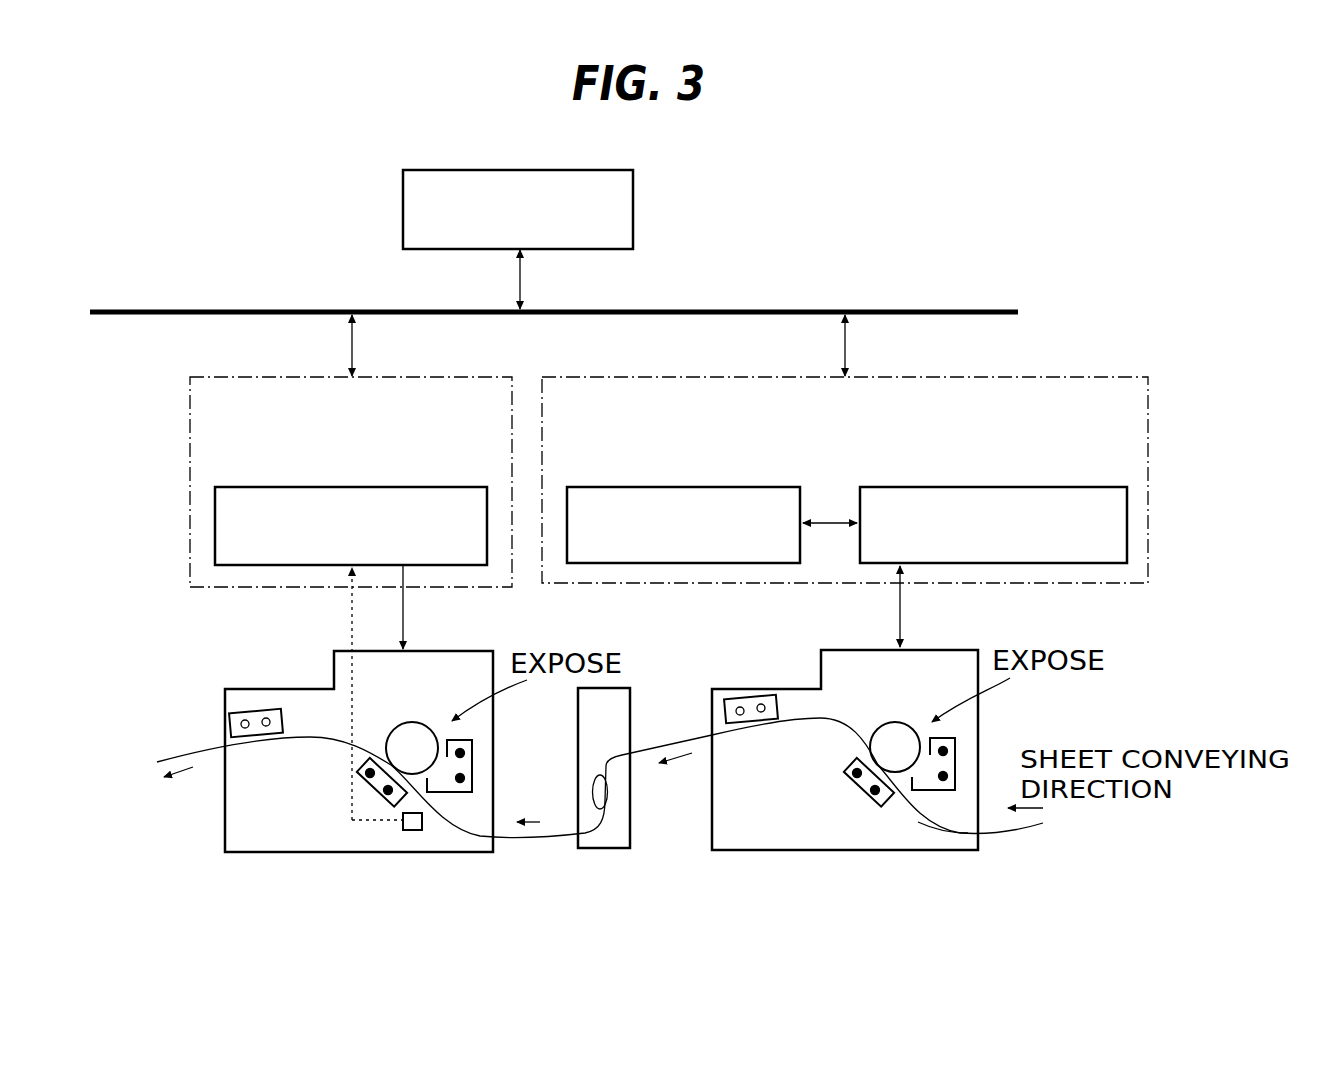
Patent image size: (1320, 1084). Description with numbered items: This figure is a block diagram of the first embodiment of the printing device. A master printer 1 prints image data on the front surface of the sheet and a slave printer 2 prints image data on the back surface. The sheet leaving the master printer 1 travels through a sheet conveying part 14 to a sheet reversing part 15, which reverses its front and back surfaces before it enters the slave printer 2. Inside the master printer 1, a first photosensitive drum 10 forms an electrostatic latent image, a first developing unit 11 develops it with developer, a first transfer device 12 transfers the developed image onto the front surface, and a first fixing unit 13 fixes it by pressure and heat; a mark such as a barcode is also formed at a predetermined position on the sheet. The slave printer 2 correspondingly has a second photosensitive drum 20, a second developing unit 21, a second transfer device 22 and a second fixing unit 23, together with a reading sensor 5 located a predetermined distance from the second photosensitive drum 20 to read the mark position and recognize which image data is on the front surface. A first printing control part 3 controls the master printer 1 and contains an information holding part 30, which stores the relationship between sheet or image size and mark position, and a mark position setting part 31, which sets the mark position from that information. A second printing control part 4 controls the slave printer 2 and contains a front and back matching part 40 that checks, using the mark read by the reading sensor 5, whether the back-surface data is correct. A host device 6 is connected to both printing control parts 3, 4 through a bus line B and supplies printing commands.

The master printer 1 is at (777, 672).
The slave printer 2 is at (290, 677).
The first printing control part 3 is at (1148, 424).
The second printing control part 4 is at (190, 447).
The reading sensor 5 is at (413, 831).
The host device 6 is at (403, 212).
The first photosensitive drum 10 is at (893, 722).
The first developing unit 11 is at (955, 748).
The first transfer device 12 is at (867, 800).
The first fixing unit 13 is at (725, 712).
The sheet conveying part 14 is at (933, 833).
The sheet reversing part 15 is at (617, 688).
The second photosensitive drum 20 is at (412, 722).
The second developing unit 21 is at (475, 765).
The second transfer device 22 is at (381, 800).
The second fixing unit 23 is at (230, 726).
The information holding part 30 is at (588, 487).
The mark position setting part 31 is at (1113, 487).
The front and back matching part 40 is at (215, 530).
The bus line B is at (895, 311).